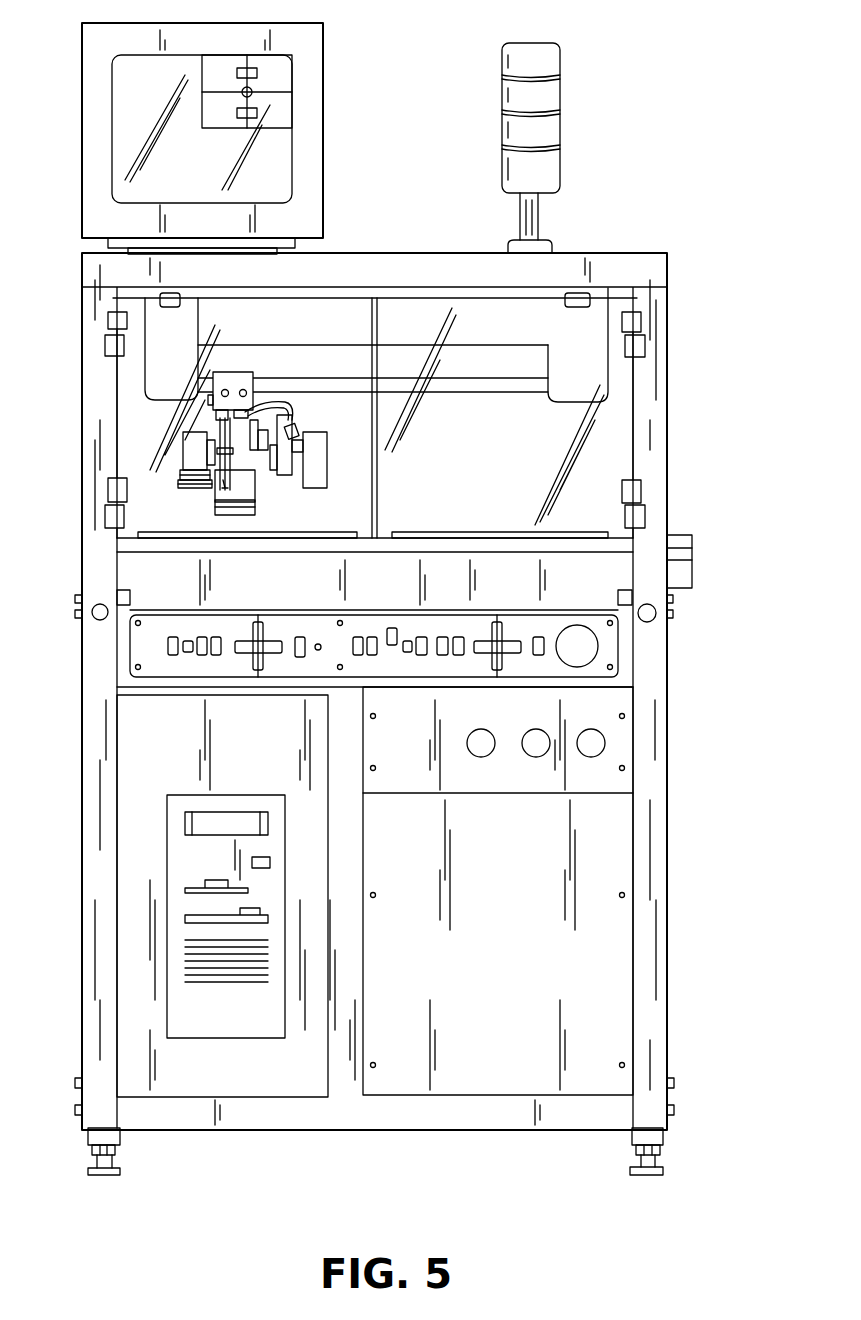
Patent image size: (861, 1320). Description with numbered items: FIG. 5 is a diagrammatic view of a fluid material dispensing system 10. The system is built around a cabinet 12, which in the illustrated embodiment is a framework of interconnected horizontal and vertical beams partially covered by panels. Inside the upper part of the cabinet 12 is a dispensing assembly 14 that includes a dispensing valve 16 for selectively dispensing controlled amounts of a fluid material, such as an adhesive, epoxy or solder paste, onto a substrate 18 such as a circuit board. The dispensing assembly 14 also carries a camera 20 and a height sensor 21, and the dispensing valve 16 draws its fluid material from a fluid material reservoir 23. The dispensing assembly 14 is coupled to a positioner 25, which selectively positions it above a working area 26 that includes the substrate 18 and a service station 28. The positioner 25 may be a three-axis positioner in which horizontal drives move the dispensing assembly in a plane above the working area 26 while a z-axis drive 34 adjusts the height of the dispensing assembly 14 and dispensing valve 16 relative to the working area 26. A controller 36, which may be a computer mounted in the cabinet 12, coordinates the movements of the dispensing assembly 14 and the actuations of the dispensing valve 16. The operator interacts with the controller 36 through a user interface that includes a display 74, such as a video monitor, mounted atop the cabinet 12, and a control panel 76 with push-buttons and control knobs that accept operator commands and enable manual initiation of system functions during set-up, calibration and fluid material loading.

The material dispensing system 10 is at (686, 68).
The cabinet 12 is at (668, 300).
The dispensing assembly 14 is at (142, 426).
The dispensing valve 16 is at (255, 500).
The substrate 18 is at (555, 530).
The camera 20 is at (183, 455).
The height sensor 21 is at (327, 465).
The fluid material reservoir 23 is at (225, 483).
The positioner 25 is at (492, 393).
The working area 26 is at (467, 518).
The service station 28 is at (293, 530).
The z-axis drive 34 is at (250, 378).
The controller 36 is at (250, 795).
The display 74 is at (214, 171).
The control panel 76 is at (618, 648).